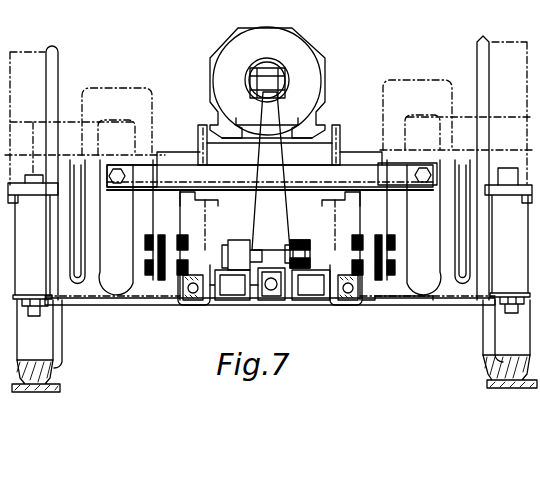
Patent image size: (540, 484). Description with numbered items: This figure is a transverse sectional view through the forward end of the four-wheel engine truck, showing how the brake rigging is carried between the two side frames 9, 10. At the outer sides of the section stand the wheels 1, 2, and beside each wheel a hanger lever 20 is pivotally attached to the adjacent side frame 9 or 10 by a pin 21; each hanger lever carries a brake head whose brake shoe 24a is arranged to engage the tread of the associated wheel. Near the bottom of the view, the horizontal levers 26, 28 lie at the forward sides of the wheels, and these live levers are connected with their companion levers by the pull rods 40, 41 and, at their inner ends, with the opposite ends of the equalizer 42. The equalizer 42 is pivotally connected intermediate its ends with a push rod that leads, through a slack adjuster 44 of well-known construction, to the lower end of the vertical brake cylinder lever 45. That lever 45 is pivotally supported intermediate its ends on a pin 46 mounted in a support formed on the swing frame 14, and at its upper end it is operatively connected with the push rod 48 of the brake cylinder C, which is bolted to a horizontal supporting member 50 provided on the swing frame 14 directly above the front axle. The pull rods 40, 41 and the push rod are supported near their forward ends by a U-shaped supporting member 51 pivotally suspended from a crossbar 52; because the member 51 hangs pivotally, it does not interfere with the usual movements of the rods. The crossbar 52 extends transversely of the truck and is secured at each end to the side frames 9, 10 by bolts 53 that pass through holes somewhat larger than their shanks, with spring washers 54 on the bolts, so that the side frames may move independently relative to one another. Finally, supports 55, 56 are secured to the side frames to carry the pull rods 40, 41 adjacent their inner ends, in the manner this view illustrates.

The wheel 1 is at (500, 50).
The wheel 2 is at (47, 50).
The side frame 9 is at (430, 82).
The side frame 10 is at (128, 88).
The swing frame 14 is at (198, 127).
The hanger lever 20 is at (36, 168).
The pin 21 is at (56, 198).
The brake shoe 24a is at (56, 253).
The horizontal lever 26 is at (418, 304).
The horizontal lever 28 is at (100, 305).
The pull rod 40 is at (350, 306).
The pull rod 41 is at (166, 305).
The equalizer 42 is at (236, 305).
The slack adjuster 44 is at (272, 305).
The brake cylinder lever 45 is at (272, 200).
The pin 46 is at (232, 257).
The push rod 48 is at (290, 82).
The horizontal supporting member 50 is at (325, 148).
The U-shaped supporting member 51 is at (188, 222).
The crossbar 52 is at (178, 165).
The bolt 53 is at (269, 190).
The spring washer 54 is at (315, 239).
The support 55 is at (378, 306).
The support 56 is at (186, 306).
The brake cylinder C is at (307, 52).